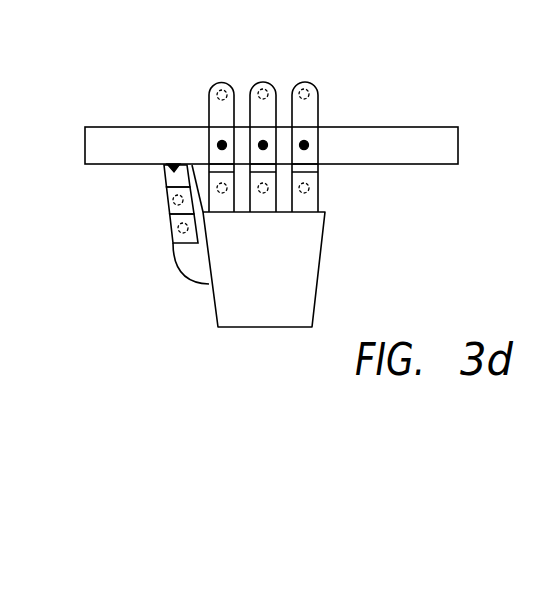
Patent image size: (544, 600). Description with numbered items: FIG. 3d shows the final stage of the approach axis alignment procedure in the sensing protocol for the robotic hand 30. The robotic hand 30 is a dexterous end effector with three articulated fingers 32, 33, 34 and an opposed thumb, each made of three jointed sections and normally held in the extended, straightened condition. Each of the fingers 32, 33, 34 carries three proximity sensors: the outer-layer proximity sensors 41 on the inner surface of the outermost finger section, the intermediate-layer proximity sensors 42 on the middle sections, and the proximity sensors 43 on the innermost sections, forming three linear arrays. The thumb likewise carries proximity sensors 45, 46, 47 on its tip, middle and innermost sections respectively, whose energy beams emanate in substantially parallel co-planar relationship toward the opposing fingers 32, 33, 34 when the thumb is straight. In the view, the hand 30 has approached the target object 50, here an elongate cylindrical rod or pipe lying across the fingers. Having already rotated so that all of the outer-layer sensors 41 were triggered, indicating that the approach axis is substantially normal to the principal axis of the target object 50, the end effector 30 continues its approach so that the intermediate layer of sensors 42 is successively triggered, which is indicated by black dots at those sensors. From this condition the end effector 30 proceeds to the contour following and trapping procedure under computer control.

The robotic hand 30 is at (325, 252).
The finger 32 is at (314, 87).
The finger 33 is at (258, 106).
The finger 34 is at (210, 96).
The proximity sensors 41 is at (229, 82).
The proximity sensors 42 is at (227, 140).
The proximity sensors 43 is at (305, 196).
The proximity sensor 45 is at (164, 178).
The proximity sensor 46 is at (175, 200).
The proximity sensor 47 is at (172, 231).
The target object 50 is at (127, 128).